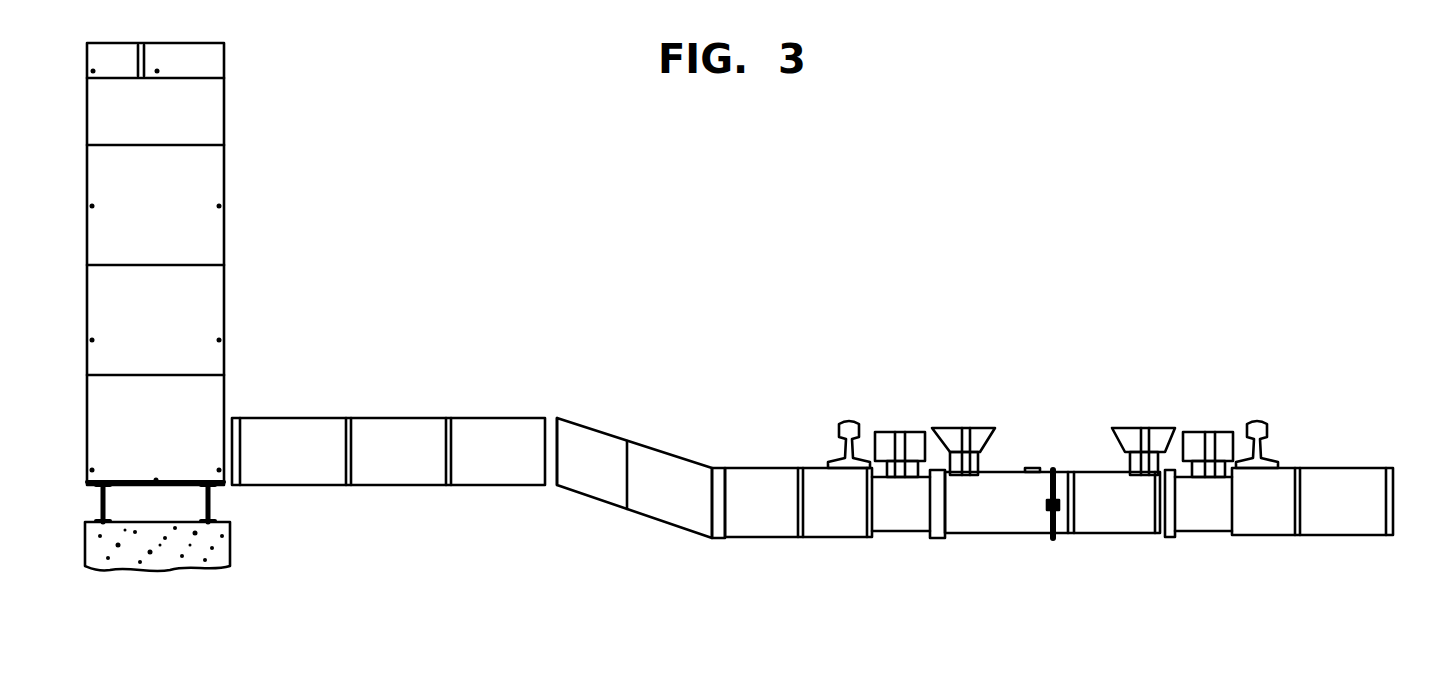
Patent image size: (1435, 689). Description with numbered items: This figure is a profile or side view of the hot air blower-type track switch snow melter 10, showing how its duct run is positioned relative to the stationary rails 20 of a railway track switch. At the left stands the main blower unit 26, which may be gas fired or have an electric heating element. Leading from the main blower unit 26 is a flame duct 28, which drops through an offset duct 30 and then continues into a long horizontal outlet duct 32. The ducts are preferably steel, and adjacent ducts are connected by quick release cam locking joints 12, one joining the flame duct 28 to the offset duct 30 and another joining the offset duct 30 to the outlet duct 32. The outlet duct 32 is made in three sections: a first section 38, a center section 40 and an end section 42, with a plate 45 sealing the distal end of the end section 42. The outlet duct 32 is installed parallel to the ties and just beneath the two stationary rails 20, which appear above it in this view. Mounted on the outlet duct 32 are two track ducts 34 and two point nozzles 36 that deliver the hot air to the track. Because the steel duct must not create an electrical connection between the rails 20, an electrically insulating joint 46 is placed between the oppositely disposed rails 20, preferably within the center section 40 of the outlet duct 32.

The hot air blower-type track switch snow melter 10 is at (592, 270).
The quick release cam locking joint 12 is at (1394, 468).
The stationary rail 20 is at (840, 420).
The main blower unit 26 is at (226, 172).
The flame duct 28 is at (390, 418).
The offset duct 30 is at (603, 432).
The outlet duct 32 is at (1333, 468).
The track duct 34 is at (976, 428).
The point nozzle 36 is at (905, 430).
The first section 38 is at (772, 540).
The center section 40 is at (1127, 535).
The end section 42 is at (1278, 537).
The plate 45 is at (1393, 522).
The electrically insulating joint 46 is at (1053, 470).